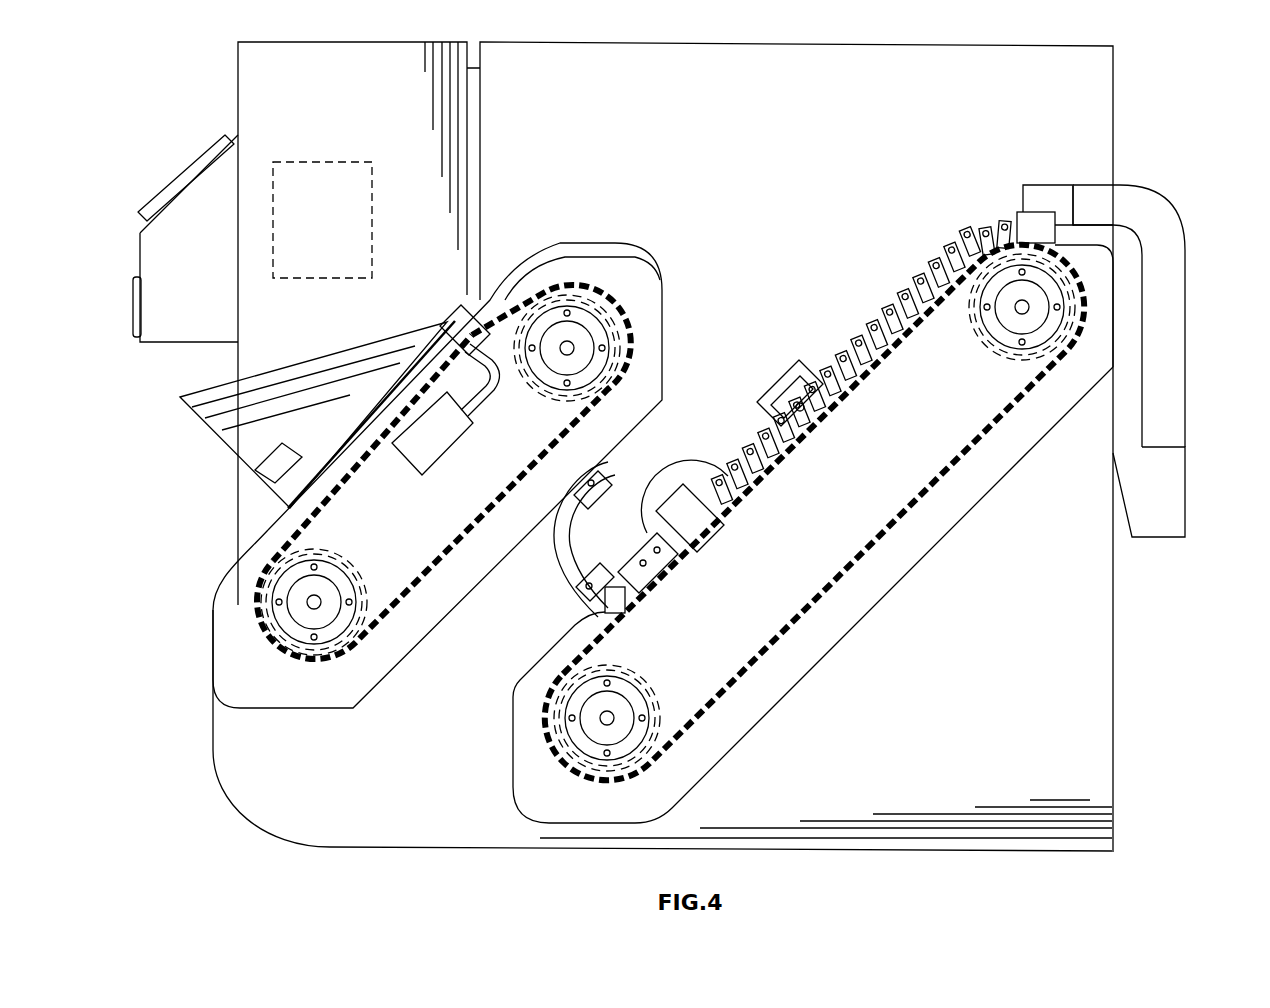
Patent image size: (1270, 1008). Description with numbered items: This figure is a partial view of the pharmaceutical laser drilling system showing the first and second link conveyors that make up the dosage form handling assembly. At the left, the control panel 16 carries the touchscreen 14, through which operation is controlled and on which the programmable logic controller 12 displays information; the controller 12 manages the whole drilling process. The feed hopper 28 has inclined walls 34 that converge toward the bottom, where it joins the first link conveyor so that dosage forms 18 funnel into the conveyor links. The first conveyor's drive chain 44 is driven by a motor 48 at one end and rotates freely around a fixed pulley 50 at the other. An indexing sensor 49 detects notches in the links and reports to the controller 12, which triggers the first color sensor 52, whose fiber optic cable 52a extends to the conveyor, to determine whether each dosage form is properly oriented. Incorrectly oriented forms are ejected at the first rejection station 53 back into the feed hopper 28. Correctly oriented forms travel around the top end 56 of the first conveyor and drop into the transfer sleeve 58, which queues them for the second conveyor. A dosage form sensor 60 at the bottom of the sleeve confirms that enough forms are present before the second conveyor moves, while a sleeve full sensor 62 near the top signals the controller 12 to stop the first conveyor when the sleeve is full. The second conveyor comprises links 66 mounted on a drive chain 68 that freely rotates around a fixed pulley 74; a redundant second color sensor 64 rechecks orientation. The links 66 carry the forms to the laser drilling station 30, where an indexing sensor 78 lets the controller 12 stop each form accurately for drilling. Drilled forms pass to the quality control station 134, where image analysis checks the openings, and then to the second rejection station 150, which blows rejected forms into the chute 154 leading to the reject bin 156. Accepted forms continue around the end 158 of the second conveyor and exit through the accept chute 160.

The programmable logic controller 12 is at (372, 182).
The touchscreen 14 is at (158, 198).
The control panel 16 is at (188, 138).
The dosage form 18 is at (910, 296).
The feed hopper 28 is at (215, 445).
The laser drilling station 30 is at (700, 520).
The inclined walls 34 is at (292, 398).
The drive chain 44 is at (430, 577).
The motor 48 is at (600, 352).
The indexing sensor 49 is at (458, 352).
The fixed pulley 50 is at (330, 588).
The first color sensor 52 is at (455, 453).
The fiber optic cable 52a is at (497, 387).
The first rejection station 53 is at (478, 333).
The top end of the first link conveyor 56 is at (627, 291).
The transfer sleeve 58 is at (568, 576).
The dosage form sensor 60 is at (597, 566).
The sleeve full sensor 62 is at (614, 486).
The second color sensor 64 is at (665, 583).
The link 66 is at (770, 470).
The drive chain 68 is at (820, 600).
The fixed pulley 74 is at (620, 705).
The indexing sensor 78 is at (680, 555).
The quality control station 134 is at (768, 380).
The second rejection station 150 is at (1020, 220).
The chute 154 is at (1050, 187).
The reject bin 156 is at (1186, 360).
The end of the second link conveyor 158 is at (1082, 258).
The accept chute 160 is at (1170, 497).